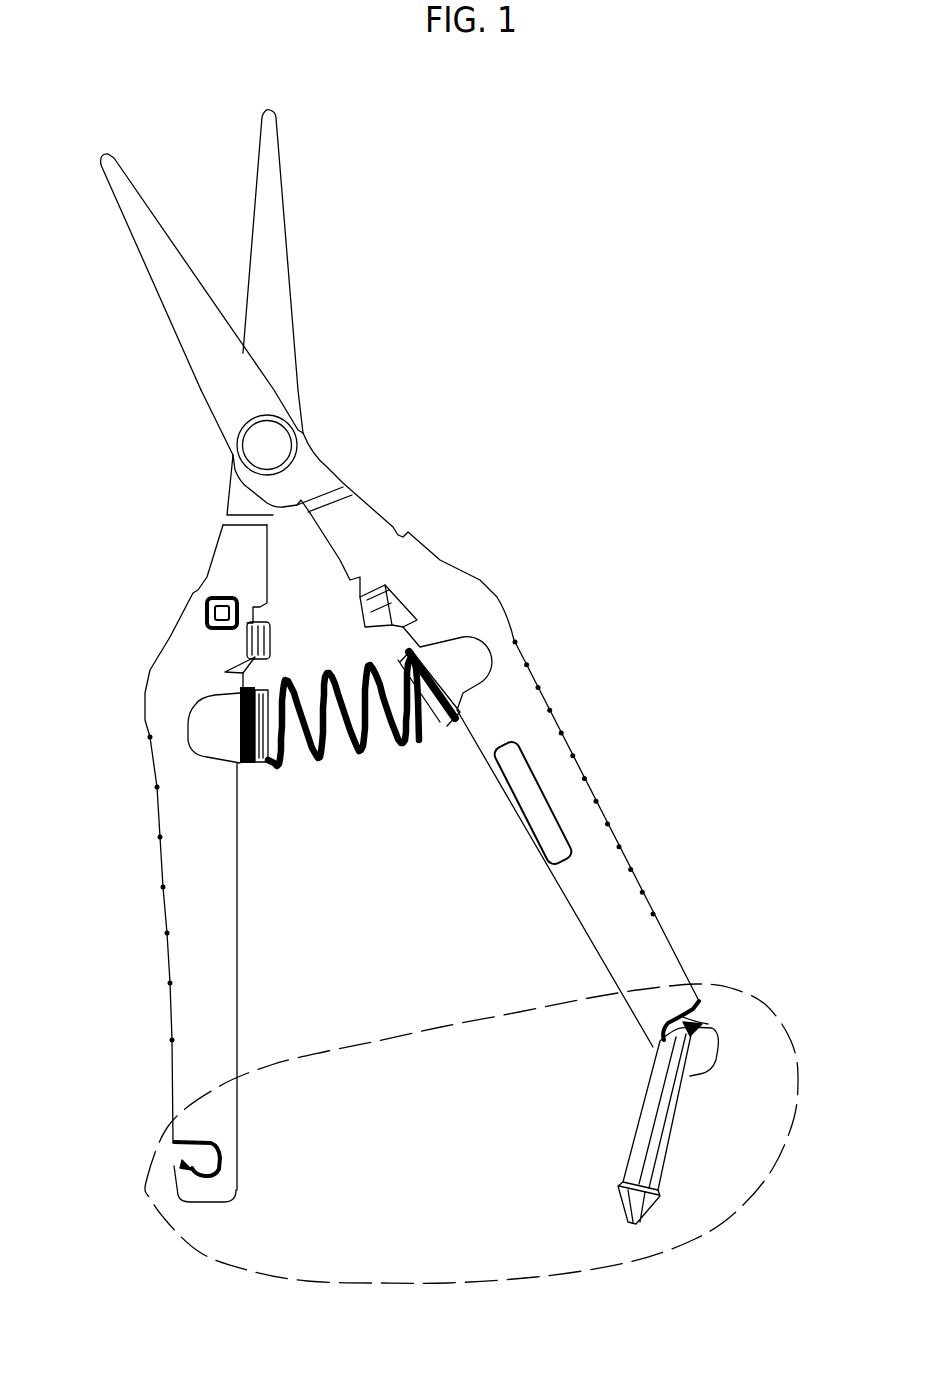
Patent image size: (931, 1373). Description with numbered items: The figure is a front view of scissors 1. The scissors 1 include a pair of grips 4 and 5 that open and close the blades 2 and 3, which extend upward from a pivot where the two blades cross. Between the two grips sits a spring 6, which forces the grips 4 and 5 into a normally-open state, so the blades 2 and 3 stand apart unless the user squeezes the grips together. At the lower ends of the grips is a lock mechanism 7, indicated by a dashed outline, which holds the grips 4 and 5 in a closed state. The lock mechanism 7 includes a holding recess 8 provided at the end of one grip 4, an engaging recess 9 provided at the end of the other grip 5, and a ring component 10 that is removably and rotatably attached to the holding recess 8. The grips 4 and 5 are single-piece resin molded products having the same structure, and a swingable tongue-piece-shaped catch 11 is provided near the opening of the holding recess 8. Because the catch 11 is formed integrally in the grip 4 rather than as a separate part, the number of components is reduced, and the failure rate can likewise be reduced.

The scissors 1 is at (400, 375).
The blade 2 is at (283, 317).
The blade 3 is at (187, 332).
The grip 4 is at (560, 677).
The grip 5 is at (163, 765).
The spring 6 is at (413, 740).
The lock mechanism 7 is at (393, 1042).
The holding recess 8 is at (728, 1003).
The engaging recess 9 is at (195, 1158).
The ring component 10 is at (647, 1147).
The catch 11 is at (697, 1014).